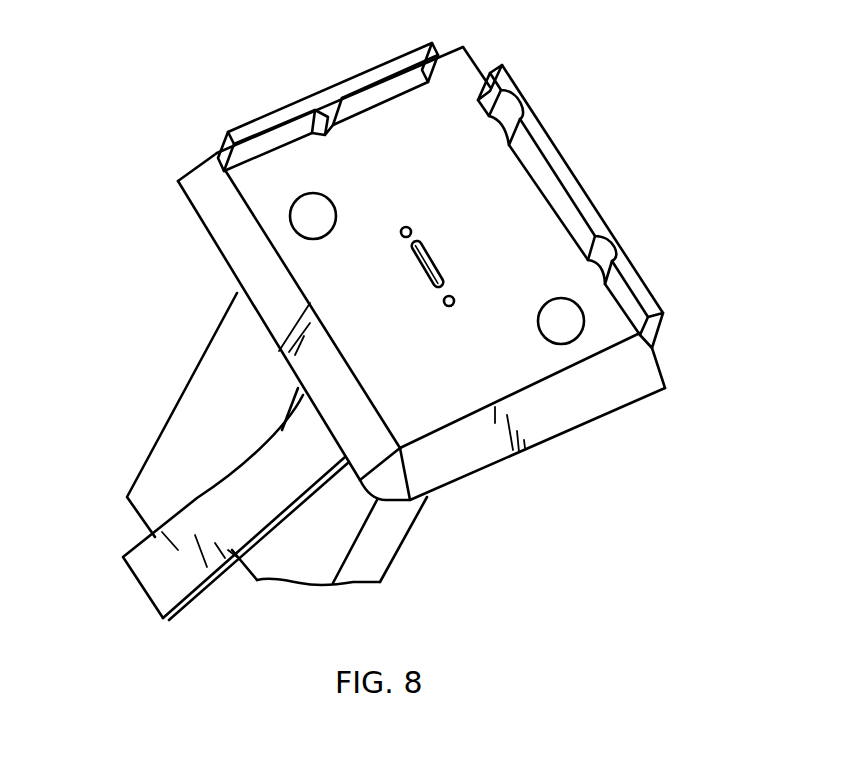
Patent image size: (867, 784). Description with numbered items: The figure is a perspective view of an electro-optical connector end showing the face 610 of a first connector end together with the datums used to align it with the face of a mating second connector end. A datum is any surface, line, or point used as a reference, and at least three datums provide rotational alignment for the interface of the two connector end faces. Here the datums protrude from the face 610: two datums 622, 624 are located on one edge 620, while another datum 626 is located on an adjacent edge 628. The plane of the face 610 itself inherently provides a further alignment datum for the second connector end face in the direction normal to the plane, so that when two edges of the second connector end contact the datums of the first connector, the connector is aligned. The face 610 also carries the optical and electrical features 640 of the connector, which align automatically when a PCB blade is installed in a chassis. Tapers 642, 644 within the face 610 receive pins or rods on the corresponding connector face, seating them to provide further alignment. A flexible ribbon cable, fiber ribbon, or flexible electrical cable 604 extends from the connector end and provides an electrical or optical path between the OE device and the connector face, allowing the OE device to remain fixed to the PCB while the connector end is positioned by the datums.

The flexible cable 604 is at (282, 472).
The face of a first connector end 610 is at (470, 383).
The edge 620 is at (573, 190).
The datum 622 is at (523, 126).
The datum 624 is at (593, 250).
The datum 626 is at (373, 72).
The adjacent edge 628 is at (343, 100).
The optical and electrical features 640 is at (420, 268).
The taper 642 is at (400, 231).
The taper 644 is at (443, 299).